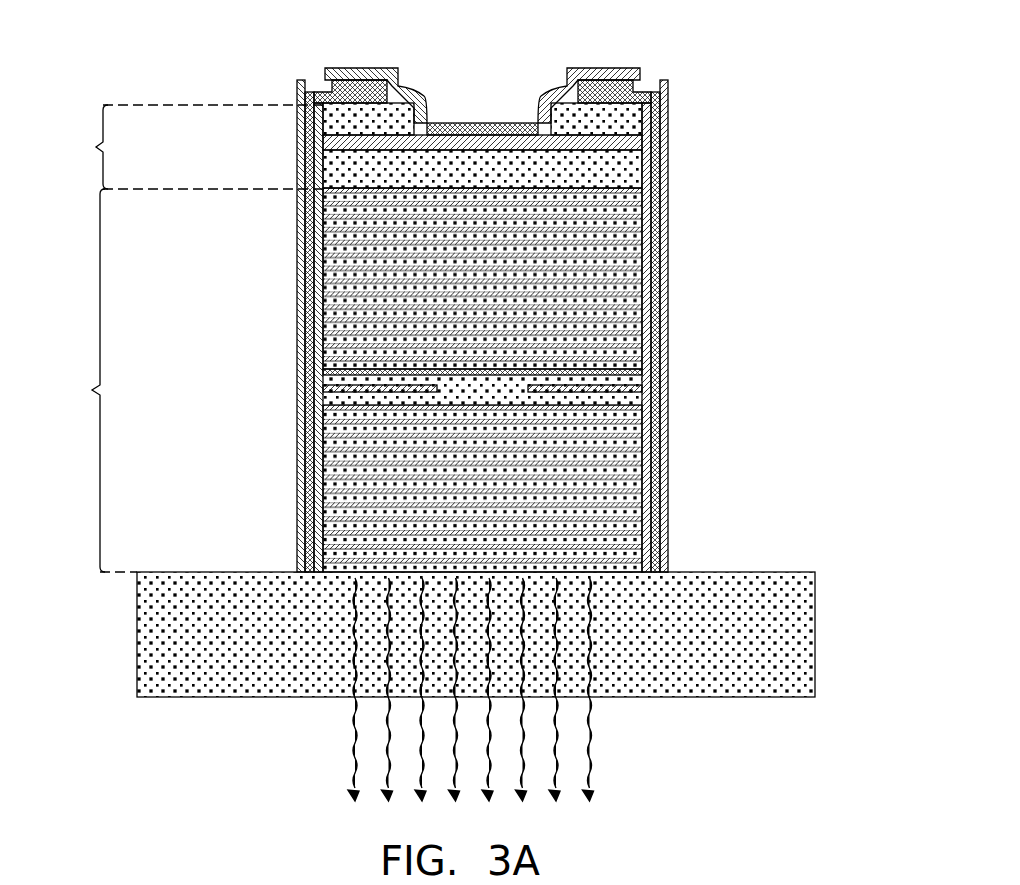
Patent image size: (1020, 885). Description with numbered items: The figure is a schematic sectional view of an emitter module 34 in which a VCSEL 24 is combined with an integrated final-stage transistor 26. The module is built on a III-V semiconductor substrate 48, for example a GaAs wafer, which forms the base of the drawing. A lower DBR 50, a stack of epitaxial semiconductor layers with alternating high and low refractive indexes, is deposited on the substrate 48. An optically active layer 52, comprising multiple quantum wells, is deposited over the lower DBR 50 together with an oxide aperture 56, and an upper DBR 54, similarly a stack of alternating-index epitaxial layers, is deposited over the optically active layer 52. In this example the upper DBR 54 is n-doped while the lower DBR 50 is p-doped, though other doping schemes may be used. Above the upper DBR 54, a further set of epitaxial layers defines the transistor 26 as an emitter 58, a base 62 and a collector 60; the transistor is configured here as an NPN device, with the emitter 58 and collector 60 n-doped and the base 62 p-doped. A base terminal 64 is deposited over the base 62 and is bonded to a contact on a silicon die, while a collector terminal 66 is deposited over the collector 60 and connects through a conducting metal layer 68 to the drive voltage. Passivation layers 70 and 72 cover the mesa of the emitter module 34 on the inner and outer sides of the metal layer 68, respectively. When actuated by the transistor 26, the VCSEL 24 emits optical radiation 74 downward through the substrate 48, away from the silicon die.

The emitter module 34 is at (186, 44).
The transistor 26 is at (195, 147).
The VCSEL 24 is at (101, 380).
The collector 60 is at (330, 120).
The base 62 is at (330, 147).
The base terminal 64 is at (482, 122).
The collector terminal 66 is at (628, 97).
The emitter 58 is at (630, 172).
The upper DBR 54 is at (330, 262).
The optically active layer 52 is at (330, 372).
The oxide aperture 56 is at (330, 388).
The lower DBR 50 is at (355, 503).
The passivation layer 70 is at (647, 272).
The conducting metal layer 68 is at (654, 352).
The passivation layer 72 is at (660, 443).
The III-V semiconductor substrate 48 is at (150, 628).
The optical radiation 74 is at (590, 748).